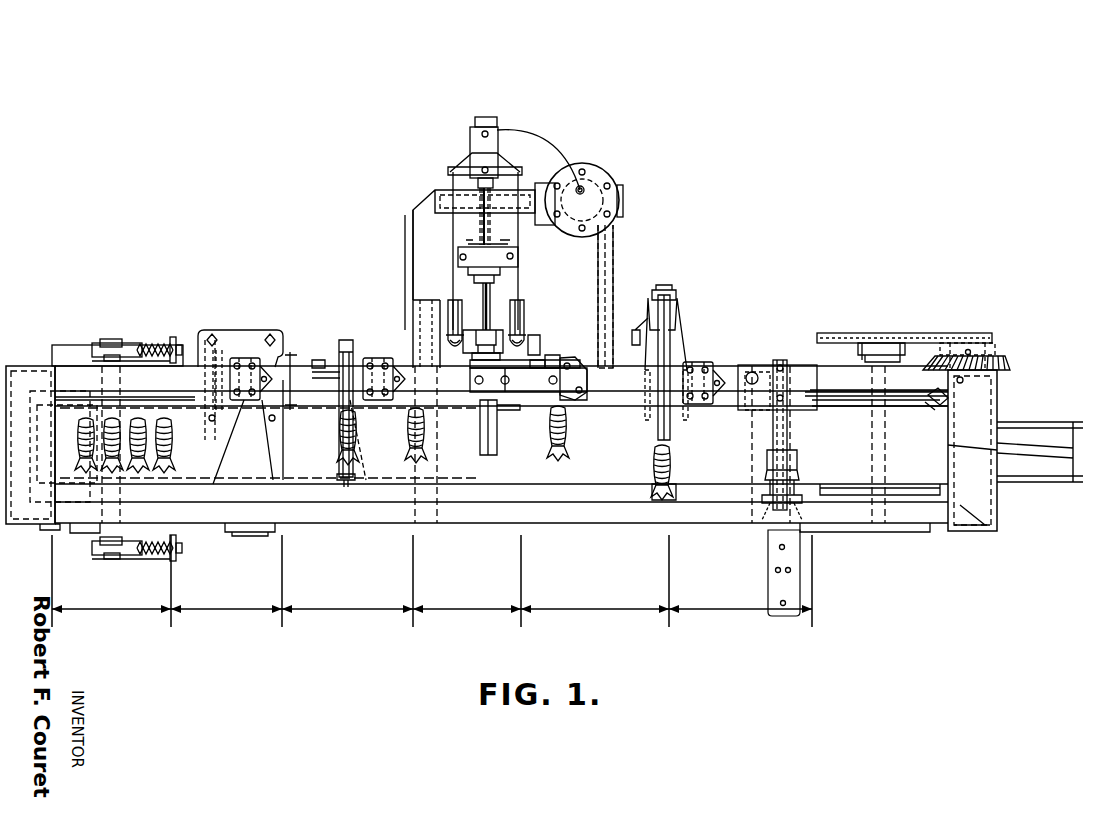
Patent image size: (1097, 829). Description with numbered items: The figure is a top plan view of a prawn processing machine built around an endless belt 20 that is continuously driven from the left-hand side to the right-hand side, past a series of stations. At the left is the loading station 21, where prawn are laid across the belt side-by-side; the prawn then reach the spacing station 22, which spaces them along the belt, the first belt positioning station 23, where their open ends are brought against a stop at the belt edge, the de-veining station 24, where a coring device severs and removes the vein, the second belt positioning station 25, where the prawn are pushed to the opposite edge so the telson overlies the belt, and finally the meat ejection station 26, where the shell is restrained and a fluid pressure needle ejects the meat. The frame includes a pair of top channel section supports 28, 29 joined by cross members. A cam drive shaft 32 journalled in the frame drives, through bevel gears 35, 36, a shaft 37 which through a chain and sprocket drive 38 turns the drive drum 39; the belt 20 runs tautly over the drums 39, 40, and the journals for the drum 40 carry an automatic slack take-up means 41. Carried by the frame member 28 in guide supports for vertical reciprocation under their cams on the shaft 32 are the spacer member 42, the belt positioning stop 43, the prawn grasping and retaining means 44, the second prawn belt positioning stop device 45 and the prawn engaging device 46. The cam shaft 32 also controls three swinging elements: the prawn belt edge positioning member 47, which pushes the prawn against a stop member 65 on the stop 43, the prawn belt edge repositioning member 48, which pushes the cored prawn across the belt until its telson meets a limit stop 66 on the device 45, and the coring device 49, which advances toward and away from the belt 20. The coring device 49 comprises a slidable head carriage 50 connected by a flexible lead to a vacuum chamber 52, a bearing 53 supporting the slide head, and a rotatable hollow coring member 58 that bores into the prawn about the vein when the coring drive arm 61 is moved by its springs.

The endless belt 20 is at (94, 475).
The loading station 21 is at (111, 598).
The spacing station 22 is at (225, 598).
The first belt positioning station 23 is at (347, 587).
The de-veining station 24 is at (467, 598).
The second belt positioning station 25 is at (595, 587).
The meat ejection station 26 is at (740, 587).
The top channel section support 28 is at (67, 382).
The top channel section support 29 is at (93, 515).
The cam drive shaft 32 is at (828, 393).
The bevel gear 35 is at (935, 410).
The bevel gear 36 is at (1000, 366).
The shaft 37 is at (968, 350).
The chain and sprocket drive 38 is at (915, 335).
The drive drum 39 is at (862, 487).
The drive drum 40 is at (181, 378).
The automatic slack take-up means 41 is at (150, 340).
The spacer member 42 is at (248, 358).
The belt positioning stop 43 is at (380, 360).
The prawn grasping and retaining means 44 is at (570, 375).
The second prawn belt positioning stop device 45 is at (697, 375).
The prawn engaging device 46 is at (783, 375).
The prawn belt edge positioning member 47 is at (350, 445).
The prawn belt edge repositioning member 48 is at (663, 400).
The coring device 49 is at (440, 263).
The slidable head carriage 50 is at (482, 158).
The vacuum chamber 52 is at (590, 195).
The bearing 53 is at (500, 262).
The coring member 58 is at (487, 300).
The coring drive arm 61 is at (453, 327).
The stop member 65 is at (340, 405).
The limit stop 66 is at (672, 483).